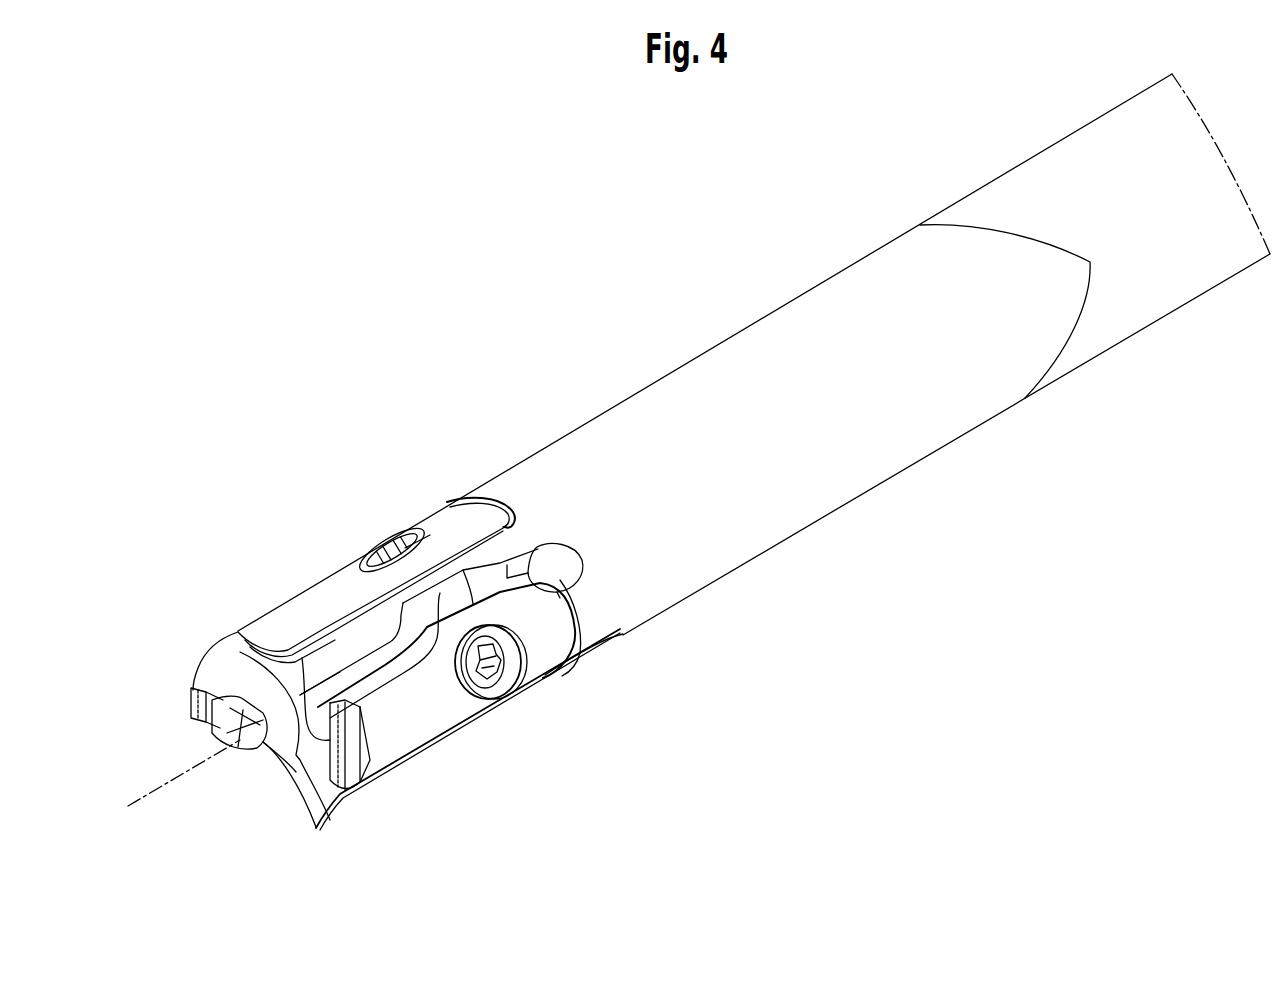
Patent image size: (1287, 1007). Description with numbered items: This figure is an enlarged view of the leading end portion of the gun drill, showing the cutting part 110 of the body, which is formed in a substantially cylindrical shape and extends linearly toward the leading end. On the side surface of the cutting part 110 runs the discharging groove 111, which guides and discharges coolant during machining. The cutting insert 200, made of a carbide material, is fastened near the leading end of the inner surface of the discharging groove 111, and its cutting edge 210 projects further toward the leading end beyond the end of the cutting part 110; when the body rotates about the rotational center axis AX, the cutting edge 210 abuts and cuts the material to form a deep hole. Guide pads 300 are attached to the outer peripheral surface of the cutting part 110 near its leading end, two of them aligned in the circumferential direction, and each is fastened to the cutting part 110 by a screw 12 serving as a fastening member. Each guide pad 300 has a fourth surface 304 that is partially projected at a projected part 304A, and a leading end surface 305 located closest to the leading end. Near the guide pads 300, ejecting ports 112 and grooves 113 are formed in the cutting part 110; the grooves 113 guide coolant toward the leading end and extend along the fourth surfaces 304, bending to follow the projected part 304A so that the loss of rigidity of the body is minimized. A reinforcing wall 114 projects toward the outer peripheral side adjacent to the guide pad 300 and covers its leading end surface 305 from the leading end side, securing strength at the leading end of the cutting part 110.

The cutting part 110 is at (855, 290).
The discharging groove 111 is at (293, 770).
The ejecting port 112 is at (557, 566).
The groove 113 is at (452, 585).
The reinforcing wall 114 is at (373, 767).
The screw 12 is at (392, 542).
The cutting insert 200 is at (195, 707).
The cutting edge 210 is at (210, 740).
The guide pad 300 is at (323, 597).
The fourth surface 304 is at (303, 677).
The projected part 304A is at (418, 543).
The leading end surface 305 is at (297, 817).
The rotational center axis AX is at (160, 792).